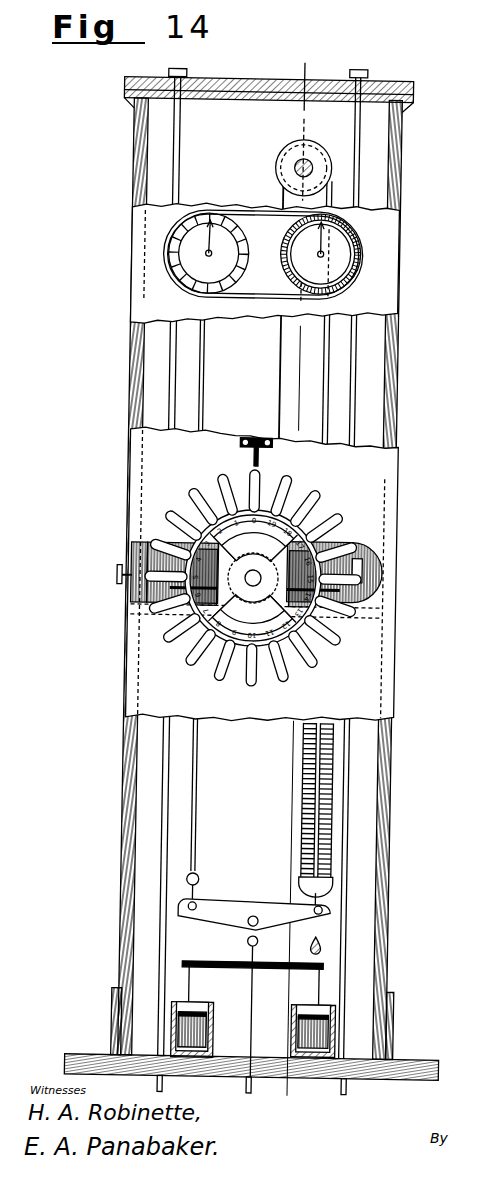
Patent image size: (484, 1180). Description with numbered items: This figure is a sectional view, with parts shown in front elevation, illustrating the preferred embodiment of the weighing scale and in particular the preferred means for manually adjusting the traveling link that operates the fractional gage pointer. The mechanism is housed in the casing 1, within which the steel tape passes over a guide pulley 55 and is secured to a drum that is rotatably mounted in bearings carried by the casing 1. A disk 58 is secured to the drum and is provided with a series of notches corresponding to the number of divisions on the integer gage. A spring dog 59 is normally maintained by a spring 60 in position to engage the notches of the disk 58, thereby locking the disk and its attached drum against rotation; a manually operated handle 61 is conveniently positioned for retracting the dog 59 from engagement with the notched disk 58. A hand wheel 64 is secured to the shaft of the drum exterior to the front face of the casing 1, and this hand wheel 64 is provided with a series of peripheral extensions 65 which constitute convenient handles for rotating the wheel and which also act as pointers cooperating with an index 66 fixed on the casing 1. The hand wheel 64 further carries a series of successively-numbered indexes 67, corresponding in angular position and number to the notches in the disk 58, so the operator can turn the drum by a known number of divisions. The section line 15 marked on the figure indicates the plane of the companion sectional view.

The casing 1 is at (389, 405).
The shaft 15 is at (293, 585).
The guide pulley 55 is at (318, 134).
The notched disk 58 is at (293, 584).
The spring dog 59 is at (187, 548).
The spring 60 is at (135, 572).
The manually operated handle 61 is at (116, 581).
The hand wheel 64 is at (329, 515).
The peripheral extensions 65 is at (294, 487).
The index 66 is at (250, 440).
The successively-numbered indexes 67 is at (232, 484).